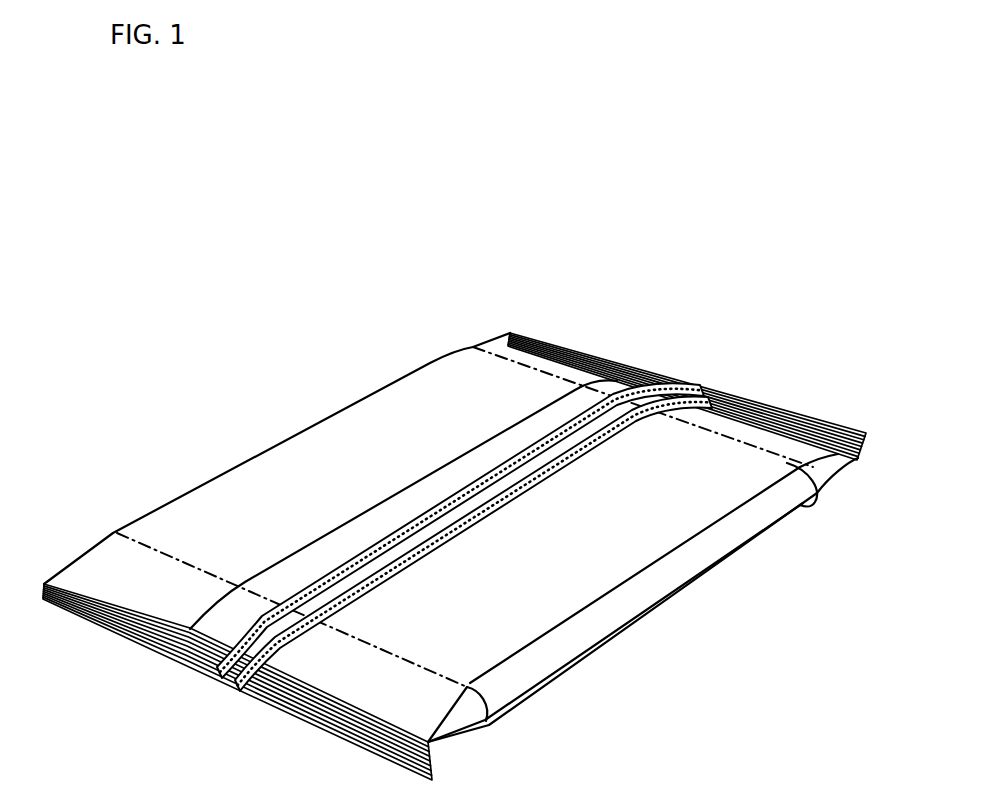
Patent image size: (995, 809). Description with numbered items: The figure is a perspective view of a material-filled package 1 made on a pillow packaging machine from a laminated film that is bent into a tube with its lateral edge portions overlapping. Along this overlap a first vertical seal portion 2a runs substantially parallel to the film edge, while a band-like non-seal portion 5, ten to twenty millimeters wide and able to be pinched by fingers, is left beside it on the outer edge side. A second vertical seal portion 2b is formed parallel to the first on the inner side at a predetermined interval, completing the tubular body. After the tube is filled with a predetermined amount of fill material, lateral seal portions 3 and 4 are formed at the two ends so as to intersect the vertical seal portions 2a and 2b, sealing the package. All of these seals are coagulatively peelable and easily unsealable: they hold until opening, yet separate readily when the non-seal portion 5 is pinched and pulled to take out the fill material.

The material-filled package 1 is at (400, 348).
The first vertical seal portion 2a is at (636, 404).
The second vertical seal portion 2b is at (703, 397).
The lateral seal portion 3 is at (783, 422).
The lateral seal portion 4 is at (283, 697).
The band-like non-seal portion 5 is at (340, 537).